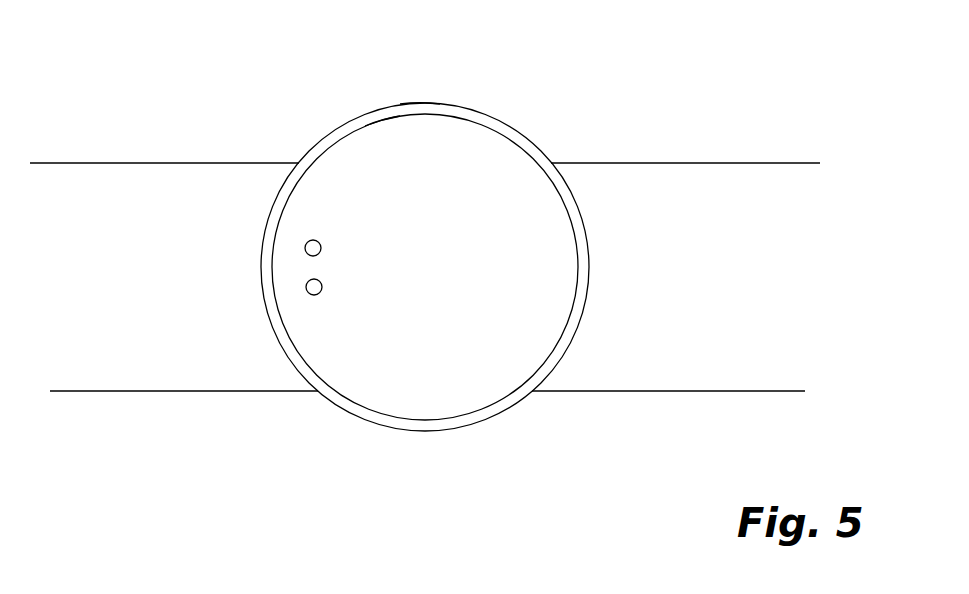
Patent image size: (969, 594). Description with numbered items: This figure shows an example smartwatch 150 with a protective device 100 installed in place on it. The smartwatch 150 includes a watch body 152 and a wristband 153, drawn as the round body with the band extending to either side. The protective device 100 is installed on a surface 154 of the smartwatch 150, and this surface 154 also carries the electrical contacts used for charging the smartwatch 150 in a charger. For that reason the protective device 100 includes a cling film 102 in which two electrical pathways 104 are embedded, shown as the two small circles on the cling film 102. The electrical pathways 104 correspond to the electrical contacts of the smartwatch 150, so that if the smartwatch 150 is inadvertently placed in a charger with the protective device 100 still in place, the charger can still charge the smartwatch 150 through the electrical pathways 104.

The protective device 100 is at (485, 203).
The cling film 102 is at (335, 160).
The electrical pathways 104 is at (306, 284).
The smartwatch 150 is at (560, 129).
The watch body 152 is at (420, 104).
The wristband 153 is at (132, 183).
The surface 154 is at (383, 118).